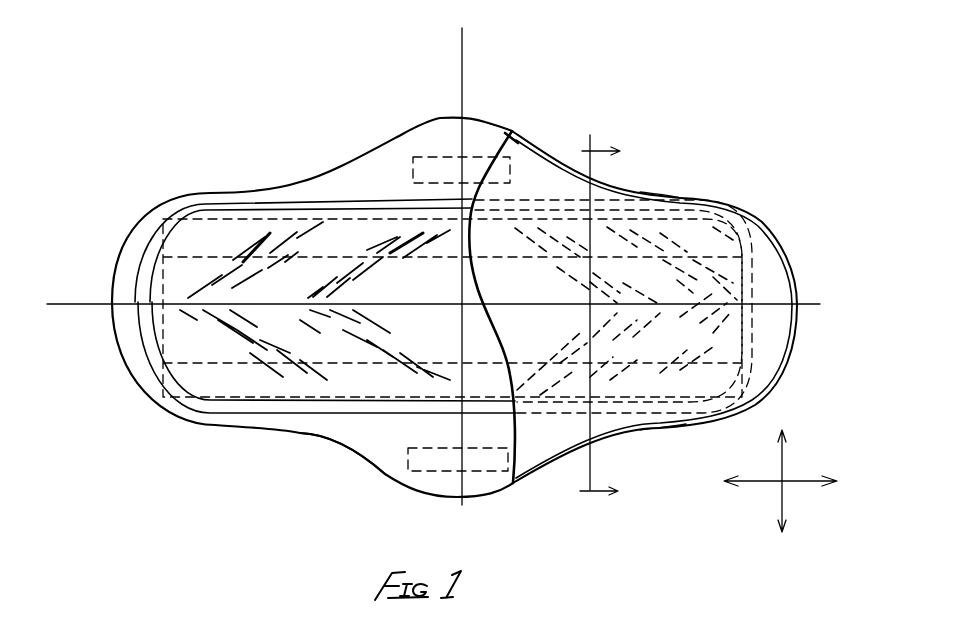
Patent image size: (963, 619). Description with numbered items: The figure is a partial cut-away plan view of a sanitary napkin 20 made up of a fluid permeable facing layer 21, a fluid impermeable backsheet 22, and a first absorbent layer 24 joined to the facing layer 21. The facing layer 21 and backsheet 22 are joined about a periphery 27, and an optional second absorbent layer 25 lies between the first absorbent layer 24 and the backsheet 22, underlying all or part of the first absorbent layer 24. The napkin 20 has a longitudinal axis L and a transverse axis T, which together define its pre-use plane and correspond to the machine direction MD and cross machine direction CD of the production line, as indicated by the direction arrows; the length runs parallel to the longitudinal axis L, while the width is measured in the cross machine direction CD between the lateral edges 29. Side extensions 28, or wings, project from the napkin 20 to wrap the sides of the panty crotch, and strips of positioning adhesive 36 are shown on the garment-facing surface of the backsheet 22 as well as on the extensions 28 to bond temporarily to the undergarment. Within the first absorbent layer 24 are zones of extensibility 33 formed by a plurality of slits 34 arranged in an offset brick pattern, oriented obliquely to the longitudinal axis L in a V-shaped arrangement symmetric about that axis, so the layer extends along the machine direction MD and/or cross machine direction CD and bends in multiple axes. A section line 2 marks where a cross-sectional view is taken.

The sanitary napkin 20 is at (582, 56).
The fluid permeable facing layer 21 is at (523, 177).
The fluid impermeable backsheet 22 is at (350, 428).
The first absorbent layer 24 is at (353, 232).
The second absorbent layer 25 is at (385, 205).
The periphery 27 is at (738, 206).
The side extensions 28 is at (513, 128).
The lateral edges 29 is at (657, 189).
The zones of extensibility 33 is at (385, 351).
The slits 34 is at (208, 283).
The positioning adhesive 36 is at (432, 150).
The transverse axis T is at (464, 36).
The longitudinal axis L is at (820, 304).
The section line 2- 2 is at (608, 313).
The cross machine direction CD is at (796, 476).
The machine direction MD is at (791, 470).